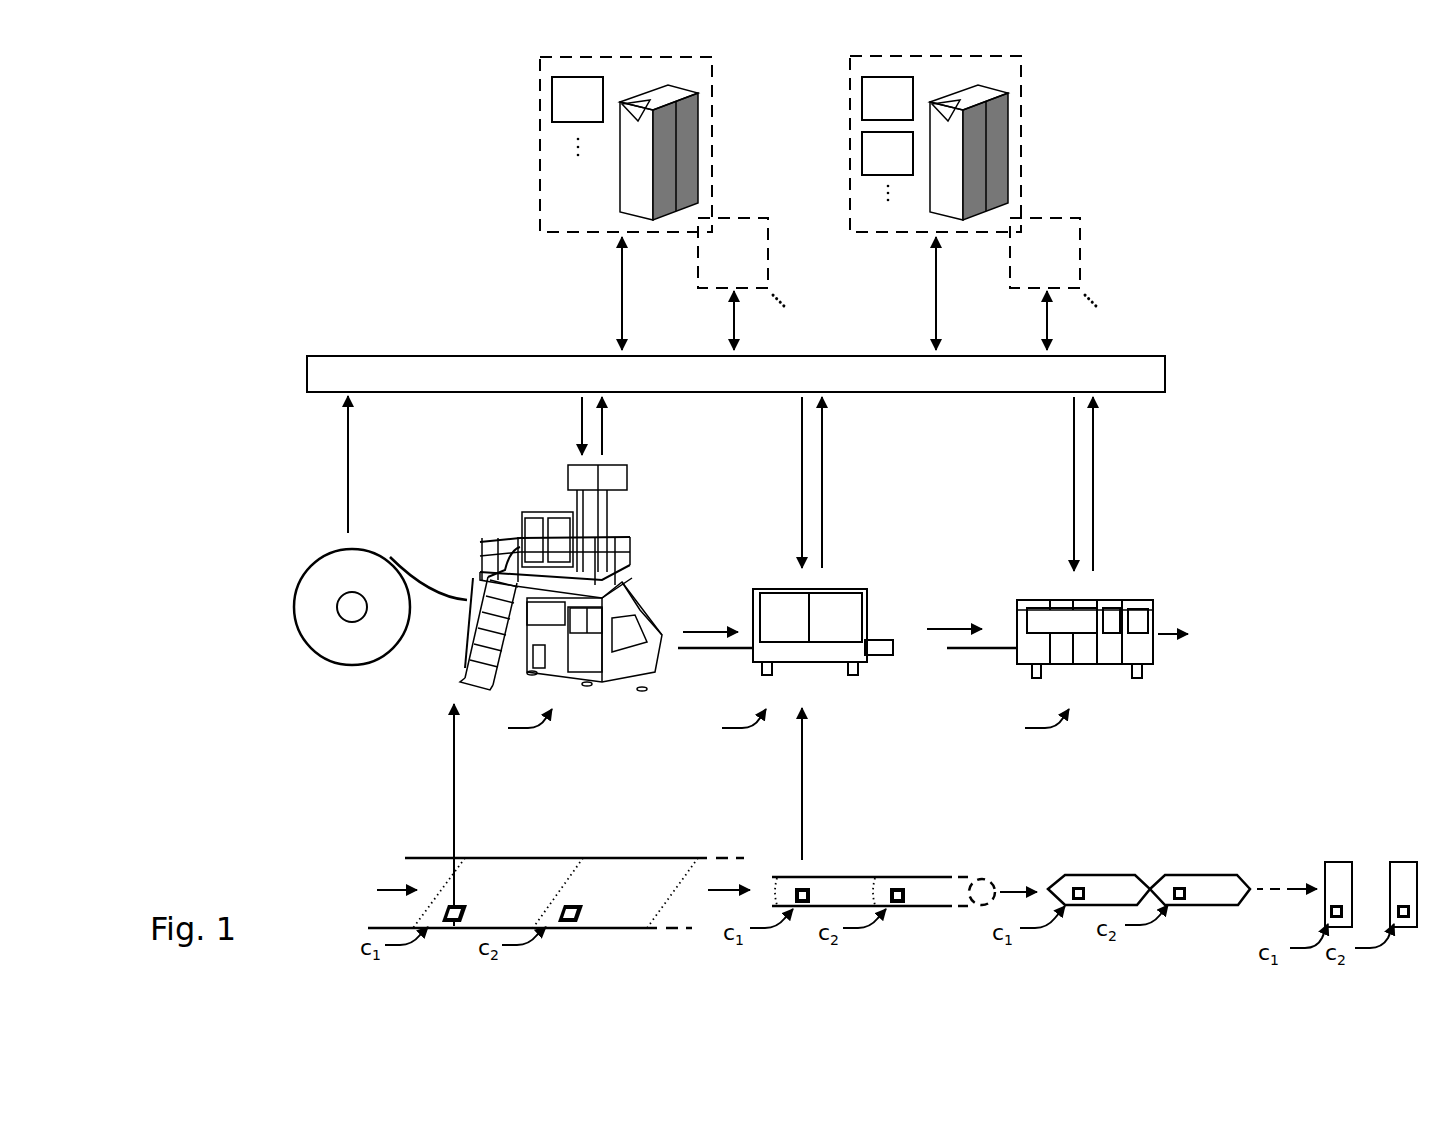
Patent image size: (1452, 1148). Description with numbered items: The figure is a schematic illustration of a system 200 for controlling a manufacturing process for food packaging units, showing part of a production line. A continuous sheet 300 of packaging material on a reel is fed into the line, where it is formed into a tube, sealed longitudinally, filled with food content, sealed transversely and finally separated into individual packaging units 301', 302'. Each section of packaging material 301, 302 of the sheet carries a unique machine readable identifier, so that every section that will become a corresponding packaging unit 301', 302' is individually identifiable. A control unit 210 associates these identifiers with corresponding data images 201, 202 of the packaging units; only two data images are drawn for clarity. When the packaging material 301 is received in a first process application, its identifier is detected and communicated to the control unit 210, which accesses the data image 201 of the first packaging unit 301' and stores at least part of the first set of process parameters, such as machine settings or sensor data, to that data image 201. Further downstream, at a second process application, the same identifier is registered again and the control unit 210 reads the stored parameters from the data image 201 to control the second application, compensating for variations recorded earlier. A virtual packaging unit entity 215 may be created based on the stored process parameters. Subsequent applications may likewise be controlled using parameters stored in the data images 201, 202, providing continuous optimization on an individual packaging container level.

The system 200 is at (366, 165).
The data image 201 is at (540, 77).
The data image 202 is at (712, 217).
The control unit 210 is at (736, 374).
The virtual packaging unit entity 215 is at (1000, 90).
The continuous sheet of packaging material 300 is at (320, 556).
The packaging material 301 is at (781, 874).
The packaging material 302 is at (891, 874).
The packaging unit 301' is at (1292, 878).
The packaging unit 302' is at (1352, 860).